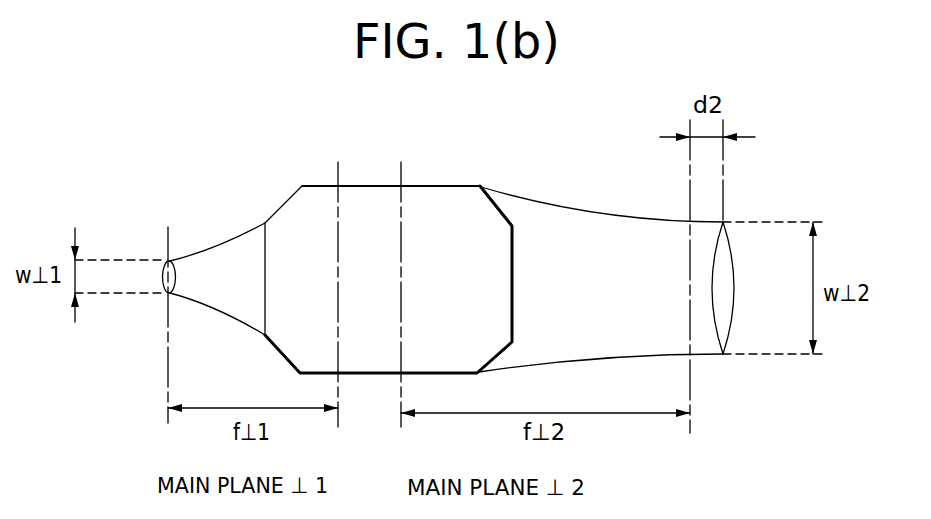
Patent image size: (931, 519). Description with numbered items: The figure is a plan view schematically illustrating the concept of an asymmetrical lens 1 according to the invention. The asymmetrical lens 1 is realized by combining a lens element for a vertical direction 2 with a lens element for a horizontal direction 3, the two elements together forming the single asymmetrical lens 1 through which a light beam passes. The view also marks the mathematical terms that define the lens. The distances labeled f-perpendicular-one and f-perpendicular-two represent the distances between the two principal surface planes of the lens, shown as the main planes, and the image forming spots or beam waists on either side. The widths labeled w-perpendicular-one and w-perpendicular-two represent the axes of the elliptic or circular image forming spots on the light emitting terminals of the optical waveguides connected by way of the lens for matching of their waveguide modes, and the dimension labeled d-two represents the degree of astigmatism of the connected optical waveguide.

The asymmetrical lens 1 is at (377, 174).
The lens element for a vertical direction 2 is at (292, 207).
The lens element for a horizontal direction 3 is at (472, 212).